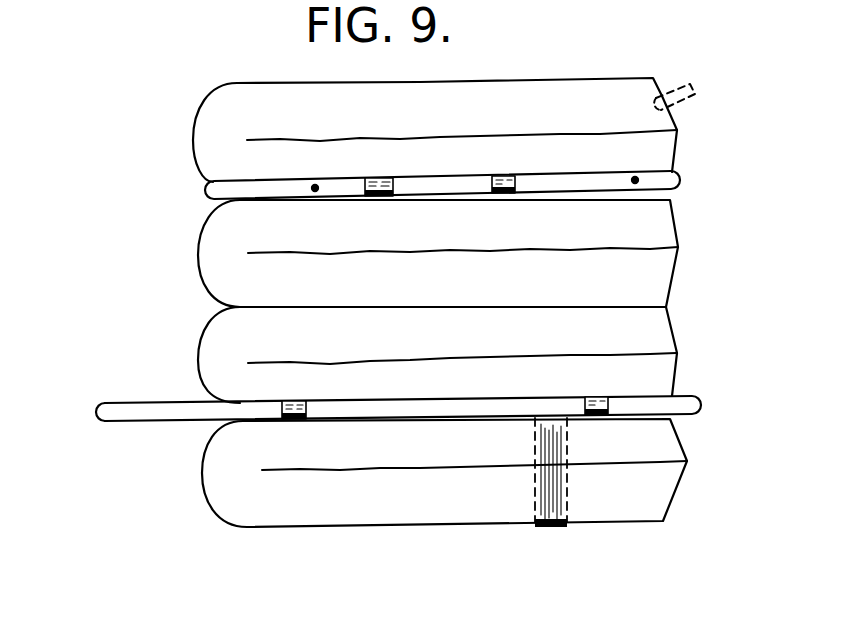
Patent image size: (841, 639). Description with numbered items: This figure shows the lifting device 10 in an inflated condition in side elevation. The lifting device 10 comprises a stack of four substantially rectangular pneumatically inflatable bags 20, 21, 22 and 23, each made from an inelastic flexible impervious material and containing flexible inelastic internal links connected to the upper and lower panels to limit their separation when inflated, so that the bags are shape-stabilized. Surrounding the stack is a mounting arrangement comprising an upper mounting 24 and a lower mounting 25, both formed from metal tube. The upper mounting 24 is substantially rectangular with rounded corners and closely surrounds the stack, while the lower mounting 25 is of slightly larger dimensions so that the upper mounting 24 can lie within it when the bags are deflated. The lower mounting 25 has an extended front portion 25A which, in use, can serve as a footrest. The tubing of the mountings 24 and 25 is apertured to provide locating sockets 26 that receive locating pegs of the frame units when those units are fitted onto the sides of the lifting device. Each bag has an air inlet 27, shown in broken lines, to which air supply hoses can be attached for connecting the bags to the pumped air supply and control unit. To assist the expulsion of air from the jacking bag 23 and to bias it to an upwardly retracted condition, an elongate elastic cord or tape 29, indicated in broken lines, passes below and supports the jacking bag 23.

The lifting device 10 is at (192, 268).
The pneumatically inflatable bag 20 is at (400, 130).
The pneumatically inflatable bag 21 is at (400, 242).
The pneumatically inflatable bag 22 is at (400, 352).
The jacking bag 23 is at (403, 461).
The upper mounting 24 is at (217, 192).
The lower mounting 25 is at (690, 400).
The extended front portion 25A is at (113, 418).
The locating socket 26 is at (315, 188).
The air inlet 27 is at (700, 87).
The elastic cord or tape 29 is at (543, 498).